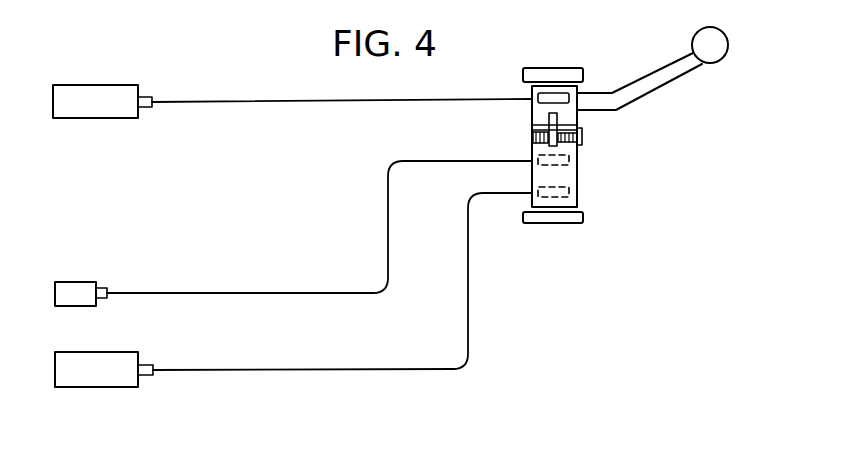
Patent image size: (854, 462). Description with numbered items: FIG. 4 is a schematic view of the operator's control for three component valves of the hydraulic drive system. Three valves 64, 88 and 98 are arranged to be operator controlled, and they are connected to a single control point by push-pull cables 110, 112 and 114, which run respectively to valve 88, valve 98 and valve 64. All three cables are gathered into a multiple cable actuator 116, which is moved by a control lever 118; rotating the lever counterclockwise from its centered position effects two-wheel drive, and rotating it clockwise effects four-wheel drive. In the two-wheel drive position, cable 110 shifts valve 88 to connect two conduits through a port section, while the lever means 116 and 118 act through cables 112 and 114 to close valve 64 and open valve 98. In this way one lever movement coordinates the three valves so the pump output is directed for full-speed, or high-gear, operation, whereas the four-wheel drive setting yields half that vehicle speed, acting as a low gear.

The valve 64 is at (110, 360).
The valve 88 is at (110, 110).
The valve 98 is at (73, 292).
The push-pull cable 110 is at (285, 102).
The push-pull cable 112 is at (318, 290).
The push-pull cable 114 is at (328, 367).
The multiple cable actuator 116 is at (565, 175).
The control lever 118 is at (713, 54).